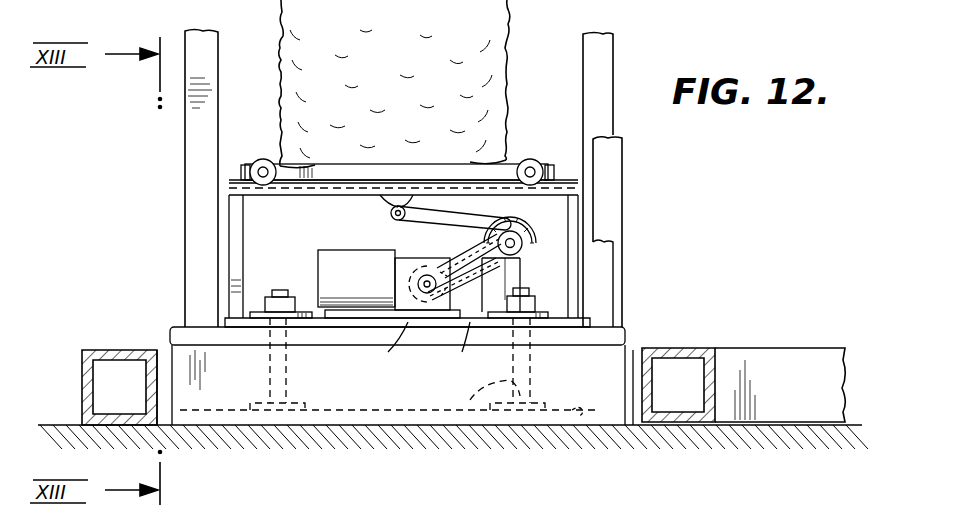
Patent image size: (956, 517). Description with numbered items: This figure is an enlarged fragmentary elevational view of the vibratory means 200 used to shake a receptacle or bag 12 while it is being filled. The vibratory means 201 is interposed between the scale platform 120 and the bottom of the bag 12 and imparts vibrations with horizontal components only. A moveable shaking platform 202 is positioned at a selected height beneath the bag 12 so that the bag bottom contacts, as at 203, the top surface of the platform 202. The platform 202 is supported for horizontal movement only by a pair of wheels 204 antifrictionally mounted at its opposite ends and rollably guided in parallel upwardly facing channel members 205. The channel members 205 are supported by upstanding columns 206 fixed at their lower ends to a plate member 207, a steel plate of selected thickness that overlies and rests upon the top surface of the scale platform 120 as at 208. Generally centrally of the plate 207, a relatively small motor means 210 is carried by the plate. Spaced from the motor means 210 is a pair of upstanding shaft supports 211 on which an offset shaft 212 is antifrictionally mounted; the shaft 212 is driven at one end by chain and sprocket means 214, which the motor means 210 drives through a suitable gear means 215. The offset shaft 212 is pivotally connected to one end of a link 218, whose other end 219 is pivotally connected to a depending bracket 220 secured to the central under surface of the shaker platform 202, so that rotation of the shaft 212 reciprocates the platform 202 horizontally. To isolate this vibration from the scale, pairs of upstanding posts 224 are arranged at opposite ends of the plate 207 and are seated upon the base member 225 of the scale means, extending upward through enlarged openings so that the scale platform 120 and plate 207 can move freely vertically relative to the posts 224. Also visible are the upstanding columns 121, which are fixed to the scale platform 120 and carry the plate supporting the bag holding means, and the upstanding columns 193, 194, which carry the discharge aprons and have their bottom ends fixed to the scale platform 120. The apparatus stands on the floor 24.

The bag 12 is at (508, 60).
The floor 24 is at (775, 348).
The scale platform 120 is at (625, 335).
The upstanding columns 121 is at (185, 156).
The upstanding column 193 is at (600, 56).
The upstanding column 194 is at (600, 278).
The vibratory means 200 is at (185, 230).
The vibratory means 201 is at (560, 178).
The shaking platform 202 is at (515, 158).
The contact 203 is at (410, 165).
The wheels 204 is at (265, 160).
The channel members 205 is at (310, 194).
The upstanding columns 206 is at (235, 275).
The plate member 207 is at (572, 318).
The resting location 208 is at (548, 322).
The motor means 210 is at (389, 284).
The shaft supports 211 is at (522, 245).
The offset shaft 212 is at (500, 226).
The chain and sprocket means 214 is at (464, 350).
The gear means 215 is at (390, 350).
The link 218 is at (432, 226).
The other end of link 219 is at (391, 212).
The depending bracket 220 is at (380, 196).
The upstanding posts 224 is at (270, 382).
The base member 225 is at (578, 410).